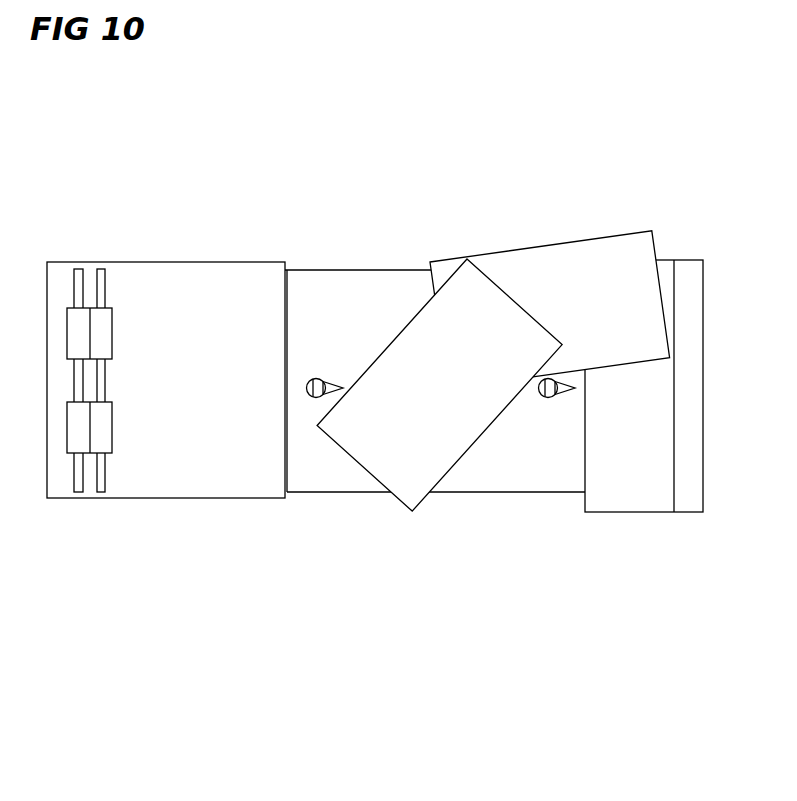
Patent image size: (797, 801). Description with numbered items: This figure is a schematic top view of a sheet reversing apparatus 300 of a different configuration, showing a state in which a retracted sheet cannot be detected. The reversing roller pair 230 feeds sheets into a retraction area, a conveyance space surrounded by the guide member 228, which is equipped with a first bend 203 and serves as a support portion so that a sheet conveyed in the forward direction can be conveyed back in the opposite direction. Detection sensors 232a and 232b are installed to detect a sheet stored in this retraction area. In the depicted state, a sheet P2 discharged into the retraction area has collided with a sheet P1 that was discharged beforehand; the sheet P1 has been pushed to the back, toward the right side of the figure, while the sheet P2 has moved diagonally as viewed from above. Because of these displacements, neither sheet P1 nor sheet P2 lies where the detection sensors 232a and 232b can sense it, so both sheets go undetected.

The sheet reversing apparatus 300 is at (373, 385).
The first bend 203 is at (164, 410).
The reversing roller pair 230 is at (75, 331).
The guide member 228 is at (337, 497).
The detection sensor 232a is at (333, 382).
The detection sensor 232b is at (563, 398).
The sheet P1 is at (572, 263).
The sheet P2 is at (450, 425).